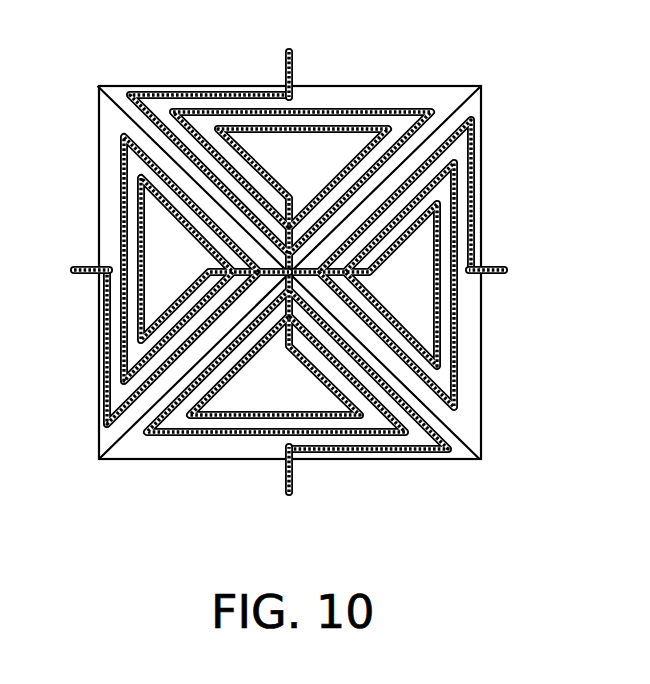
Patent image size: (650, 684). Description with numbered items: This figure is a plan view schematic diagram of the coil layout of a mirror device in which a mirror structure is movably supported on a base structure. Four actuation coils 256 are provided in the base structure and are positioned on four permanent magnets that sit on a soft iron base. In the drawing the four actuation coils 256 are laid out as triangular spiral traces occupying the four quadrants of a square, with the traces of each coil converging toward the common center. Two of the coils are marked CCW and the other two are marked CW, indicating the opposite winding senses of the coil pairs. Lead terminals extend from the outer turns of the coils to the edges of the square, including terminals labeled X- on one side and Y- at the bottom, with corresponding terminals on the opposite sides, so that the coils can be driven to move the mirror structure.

The actuation coil 256 is at (292, 279).
The counter-clockwise wound coils CCW is at (325, 164).
The clockwise wound coils CW is at (190, 279).
The X-axis negative lead terminal X- is at (70, 268).
The Y-axis negative lead terminal Y- is at (292, 482).